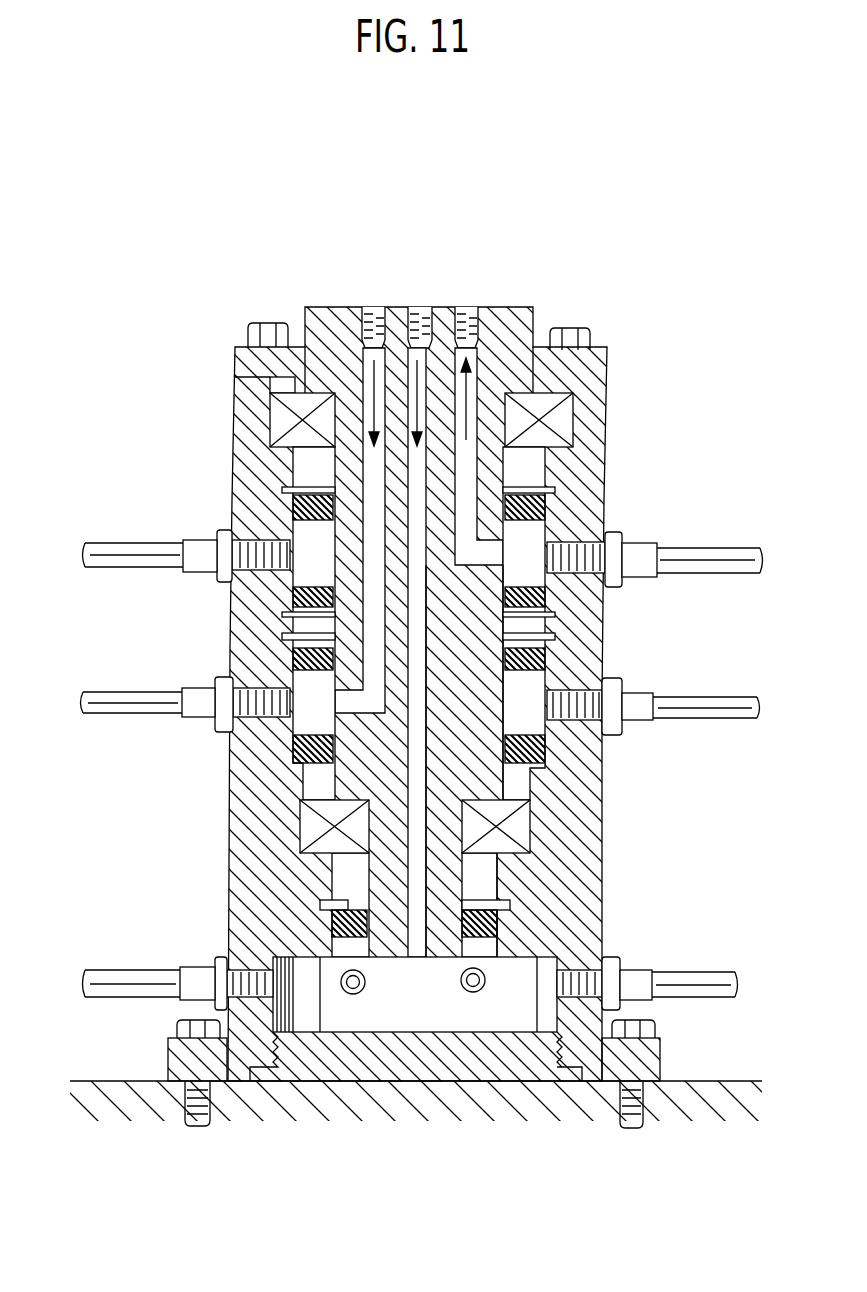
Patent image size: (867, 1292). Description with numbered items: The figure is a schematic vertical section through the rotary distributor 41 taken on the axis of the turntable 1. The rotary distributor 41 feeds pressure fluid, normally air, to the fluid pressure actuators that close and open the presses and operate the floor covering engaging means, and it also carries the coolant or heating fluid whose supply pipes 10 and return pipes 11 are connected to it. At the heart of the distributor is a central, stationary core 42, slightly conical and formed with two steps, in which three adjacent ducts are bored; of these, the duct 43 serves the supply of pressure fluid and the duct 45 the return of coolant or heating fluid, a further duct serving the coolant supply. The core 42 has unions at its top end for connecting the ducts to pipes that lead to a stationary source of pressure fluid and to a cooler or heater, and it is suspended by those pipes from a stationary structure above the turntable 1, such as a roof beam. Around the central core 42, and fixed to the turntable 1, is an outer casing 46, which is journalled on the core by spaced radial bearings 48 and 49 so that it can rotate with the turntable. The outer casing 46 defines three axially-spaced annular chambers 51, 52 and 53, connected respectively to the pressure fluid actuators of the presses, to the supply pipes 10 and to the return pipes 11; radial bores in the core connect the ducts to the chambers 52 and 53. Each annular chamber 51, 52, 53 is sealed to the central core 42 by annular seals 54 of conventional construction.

The turntable 1 is at (110, 1100).
The supply pipes 10 is at (120, 700).
The return pipes 11 is at (133, 555).
The rotary distributor 41 is at (370, 367).
The central core 42 is at (472, 712).
The duct 43 is at (422, 363).
The duct 45 is at (467, 363).
The outer casing 46 is at (567, 907).
The radial bearing 48 is at (520, 830).
The radial bearing 49 is at (557, 422).
The annular chamber 51 is at (527, 980).
The annular chamber 52 is at (548, 662).
The annular chamber 53 is at (550, 530).
The annular seals 54 is at (293, 507).